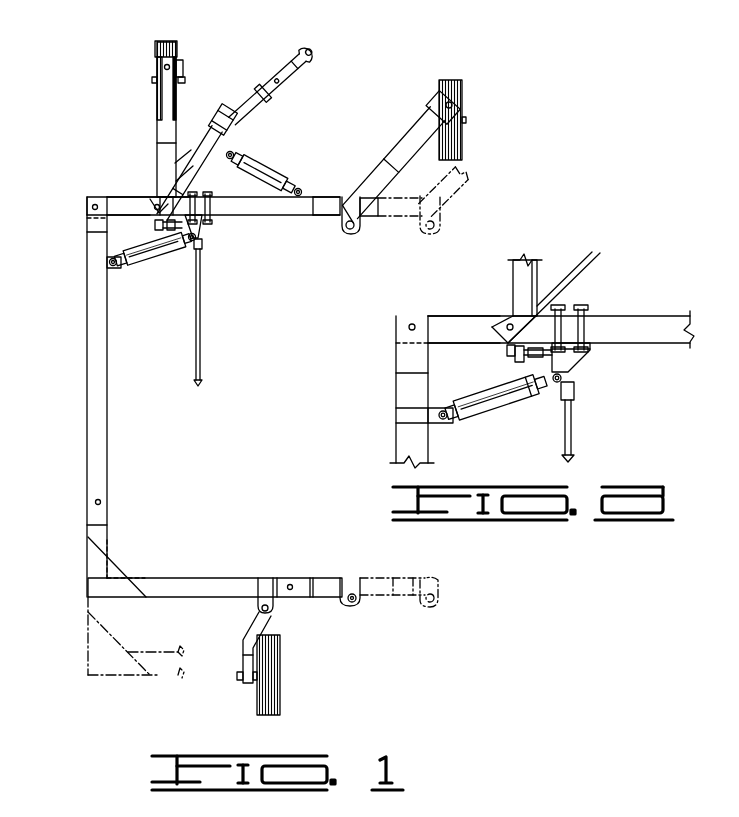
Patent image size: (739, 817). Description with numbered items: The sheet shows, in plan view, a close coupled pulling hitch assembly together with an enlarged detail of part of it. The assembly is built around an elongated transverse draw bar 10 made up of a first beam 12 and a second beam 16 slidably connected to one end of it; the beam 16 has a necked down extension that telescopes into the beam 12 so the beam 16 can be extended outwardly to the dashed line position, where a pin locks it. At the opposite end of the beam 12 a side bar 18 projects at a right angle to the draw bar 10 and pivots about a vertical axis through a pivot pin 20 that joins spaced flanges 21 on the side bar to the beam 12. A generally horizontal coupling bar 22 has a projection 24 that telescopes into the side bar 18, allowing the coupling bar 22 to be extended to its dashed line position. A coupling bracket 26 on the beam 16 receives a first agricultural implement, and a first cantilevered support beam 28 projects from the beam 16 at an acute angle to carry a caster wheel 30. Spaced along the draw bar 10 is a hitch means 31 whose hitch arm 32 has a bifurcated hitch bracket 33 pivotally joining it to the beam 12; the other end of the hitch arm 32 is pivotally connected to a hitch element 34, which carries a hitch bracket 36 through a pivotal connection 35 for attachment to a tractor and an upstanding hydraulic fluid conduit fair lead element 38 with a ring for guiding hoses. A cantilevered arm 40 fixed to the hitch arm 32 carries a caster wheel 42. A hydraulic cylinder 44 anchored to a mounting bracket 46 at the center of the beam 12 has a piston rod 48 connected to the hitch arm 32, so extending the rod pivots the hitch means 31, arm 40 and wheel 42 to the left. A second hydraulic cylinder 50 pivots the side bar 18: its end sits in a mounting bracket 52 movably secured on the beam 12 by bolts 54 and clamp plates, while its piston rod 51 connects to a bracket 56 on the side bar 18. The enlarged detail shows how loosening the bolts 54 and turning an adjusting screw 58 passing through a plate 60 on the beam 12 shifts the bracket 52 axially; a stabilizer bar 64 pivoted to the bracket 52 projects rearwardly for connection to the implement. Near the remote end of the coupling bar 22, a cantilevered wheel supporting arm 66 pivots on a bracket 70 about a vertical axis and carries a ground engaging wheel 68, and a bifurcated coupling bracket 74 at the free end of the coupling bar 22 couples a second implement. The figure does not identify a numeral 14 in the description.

In FIG. 1, the transverse draw bar 10 is at (279, 218).
In FIG. 3, the transverse draw bar 10 is at (662, 345).
In FIG. 1, the first beam 12 is at (222, 216).
In FIG. 3, the first beam 12 is at (655, 315).
In FIG. 1, the left beam section 14 is at (123, 200).
In FIG. 3, the left beam section 14 is at (449, 336).
In FIG. 1, the second beam 16 is at (328, 218).
In FIG. 1, the side bar 18 is at (86, 405).
In FIG. 1, the pivot pin 20 is at (92, 208).
In FIG. 3, the pivot pin 20 is at (412, 322).
In FIG. 3, the spaced flanges 21 is at (400, 357).
In FIG. 1, the coupling bar 22 is at (186, 590).
In FIG. 1, the projection 24 is at (106, 543).
In FIG. 1, the coupling bracket 26 is at (356, 229).
In FIG. 1, the first cantilevered support beam 28 is at (387, 172).
In FIG. 1, the caster wheel 30 is at (456, 92).
In FIG. 1, the hitch means 31 is at (191, 160).
In FIG. 1, the hitch arm 32 is at (212, 154).
In FIG. 3, the hitch arm 32 is at (572, 283).
In FIG. 1, the bifurcated hitch bracket 33 is at (152, 203).
In FIG. 3, the bifurcated hitch bracket 33 is at (498, 322).
In FIG. 1, the hitch element 34 is at (252, 106).
In FIG. 1, the pivotal connection 35 is at (232, 118).
In FIG. 1, the hitch bracket 36 is at (292, 66).
In FIG. 1, the hydraulic fluid conduit fair lead element 38 is at (276, 98).
In FIG. 1, the cantilevered arm 40 is at (160, 110).
In FIG. 3, the cantilevered arm 40 is at (512, 276).
In FIG. 1, the caster wheel 42 is at (160, 42).
In FIG. 1, the hydraulic cylinder 44 is at (275, 180).
In FIG. 1, the mounting bracket 46 is at (302, 189).
In FIG. 1, the piston rod 48 is at (236, 153).
In FIG. 1, the hydraulic cylinder 50 is at (156, 257).
In FIG. 3, the hydraulic cylinder 50 is at (491, 409).
In FIG. 1, the piston rod 51 is at (124, 268).
In FIG. 3, the piston rod 51 is at (450, 425).
In FIG. 1, the mounting bracket 52 is at (201, 239).
In FIG. 3, the mounting bracket 52 is at (576, 366).
In FIG. 1, the bolts 54 is at (209, 205).
In FIG. 3, the bolts 54 is at (588, 331).
In FIG. 1, the bracket 56 is at (100, 270).
In FIG. 3, the bracket 56 is at (402, 416).
In FIG. 1, the adjusting screw 58 is at (174, 230).
In FIG. 3, the adjusting screw 58 is at (532, 357).
In FIG. 1, the plate 60 is at (154, 225).
In FIG. 3, the plate 60 is at (506, 352).
In FIG. 1, the stabilizer bar 64 is at (195, 363).
In FIG. 3, the stabilizer bar 64 is at (574, 440).
In FIG. 1, the cantilevered wheel supporting arm 66 is at (250, 628).
In FIG. 1, the ground engaging wheel 68 is at (265, 704).
In FIG. 1, the bracket 70 is at (265, 580).
In FIG. 1, the bifurcated coupling bracket 74 is at (347, 608).